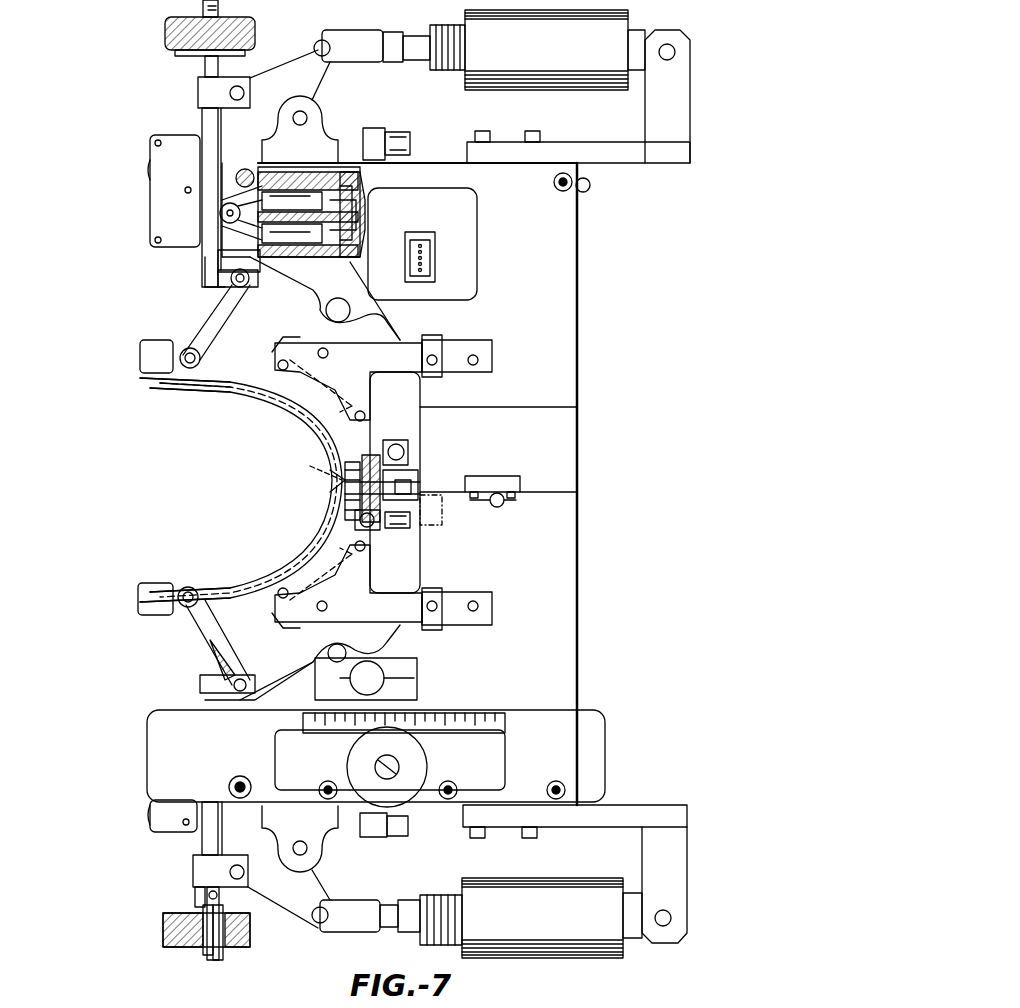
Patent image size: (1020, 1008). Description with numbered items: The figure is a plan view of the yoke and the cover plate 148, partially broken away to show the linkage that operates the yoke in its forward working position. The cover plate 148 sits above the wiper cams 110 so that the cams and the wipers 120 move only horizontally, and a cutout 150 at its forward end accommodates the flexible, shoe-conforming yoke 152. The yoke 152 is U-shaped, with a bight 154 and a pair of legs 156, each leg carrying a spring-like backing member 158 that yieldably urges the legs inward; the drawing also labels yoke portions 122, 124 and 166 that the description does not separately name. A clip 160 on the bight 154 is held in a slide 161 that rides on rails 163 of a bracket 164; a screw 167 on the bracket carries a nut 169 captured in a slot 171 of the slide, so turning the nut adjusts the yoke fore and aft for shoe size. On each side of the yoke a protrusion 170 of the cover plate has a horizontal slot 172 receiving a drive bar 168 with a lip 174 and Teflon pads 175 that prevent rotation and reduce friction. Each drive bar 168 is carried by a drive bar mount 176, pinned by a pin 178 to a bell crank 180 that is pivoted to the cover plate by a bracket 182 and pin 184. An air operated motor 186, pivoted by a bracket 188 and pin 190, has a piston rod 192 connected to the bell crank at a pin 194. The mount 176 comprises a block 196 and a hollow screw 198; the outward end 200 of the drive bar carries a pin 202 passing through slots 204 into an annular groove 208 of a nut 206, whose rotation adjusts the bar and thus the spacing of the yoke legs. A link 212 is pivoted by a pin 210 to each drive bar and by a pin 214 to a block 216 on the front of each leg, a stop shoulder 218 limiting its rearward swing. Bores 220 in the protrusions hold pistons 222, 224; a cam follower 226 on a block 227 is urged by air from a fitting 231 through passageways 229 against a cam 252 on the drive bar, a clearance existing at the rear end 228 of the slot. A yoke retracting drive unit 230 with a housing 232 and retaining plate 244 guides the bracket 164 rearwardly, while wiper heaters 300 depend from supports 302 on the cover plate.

The wiper cam 110 is at (350, 262).
The wiper 120 is at (302, 478).
The horseshoe band 122 is at (240, 420).
The band end 124 is at (330, 476).
The cover plate 148 is at (577, 584).
The cutout 150 is at (370, 312).
The yoke 152 is at (122, 383).
The bight 154 is at (326, 490).
The yoke leg 156 is at (222, 392).
The backing member 158 is at (262, 390).
The clip 160 is at (368, 456).
The slide 161 is at (360, 500).
The rail 163 is at (350, 460).
The bracket 164 is at (412, 470).
The outer band 166 is at (184, 390).
The screw 167 is at (411, 488).
The drive bar 168 is at (204, 178).
The nut 169 is at (392, 460).
The protrusion 170 is at (155, 250).
The slot 171 is at (436, 509).
The slot 172 is at (218, 258).
The lip 174 is at (150, 190).
The Teflon pad 175 is at (168, 197).
The drive bar mount 176 is at (141, 86).
The pin 178 is at (243, 90).
The bell crank 180 is at (305, 48).
The bracket 182 is at (312, 130).
The pin 184 is at (306, 115).
The air operated motor 186 is at (550, 34).
The bracket 188 is at (672, 102).
The pin 190 is at (675, 52).
The piston rod 192 is at (407, 36).
The pin 194 is at (326, 40).
The block 196 is at (198, 100).
The hollow screw 198 is at (205, 70).
The outward end 200 is at (216, 958).
The pin 202 is at (203, 950).
The slot 204 is at (210, 900).
The nut 206 is at (168, 24).
The annular groove 208 is at (165, 937).
The pin 210 is at (248, 286).
The link 212 is at (212, 330).
The pin 214 is at (182, 350).
The block 216 is at (141, 350).
The stop shoulder 218 is at (227, 684).
The bore 220 is at (361, 235).
The piston 222 is at (308, 245).
The piston 224 is at (302, 186).
The cam follower 226 is at (220, 214).
The block 227 is at (254, 180).
The rear end 228 is at (250, 224).
The passageway 229 is at (352, 206).
The yoke retracting drive unit 230 is at (536, 394).
The fitting 231 is at (370, 128).
The housing 232 is at (508, 416).
The retaining plate 244 is at (490, 474).
The cam 252 is at (221, 131).
The wiper heater 300 is at (335, 352).
The support 302 is at (308, 340).